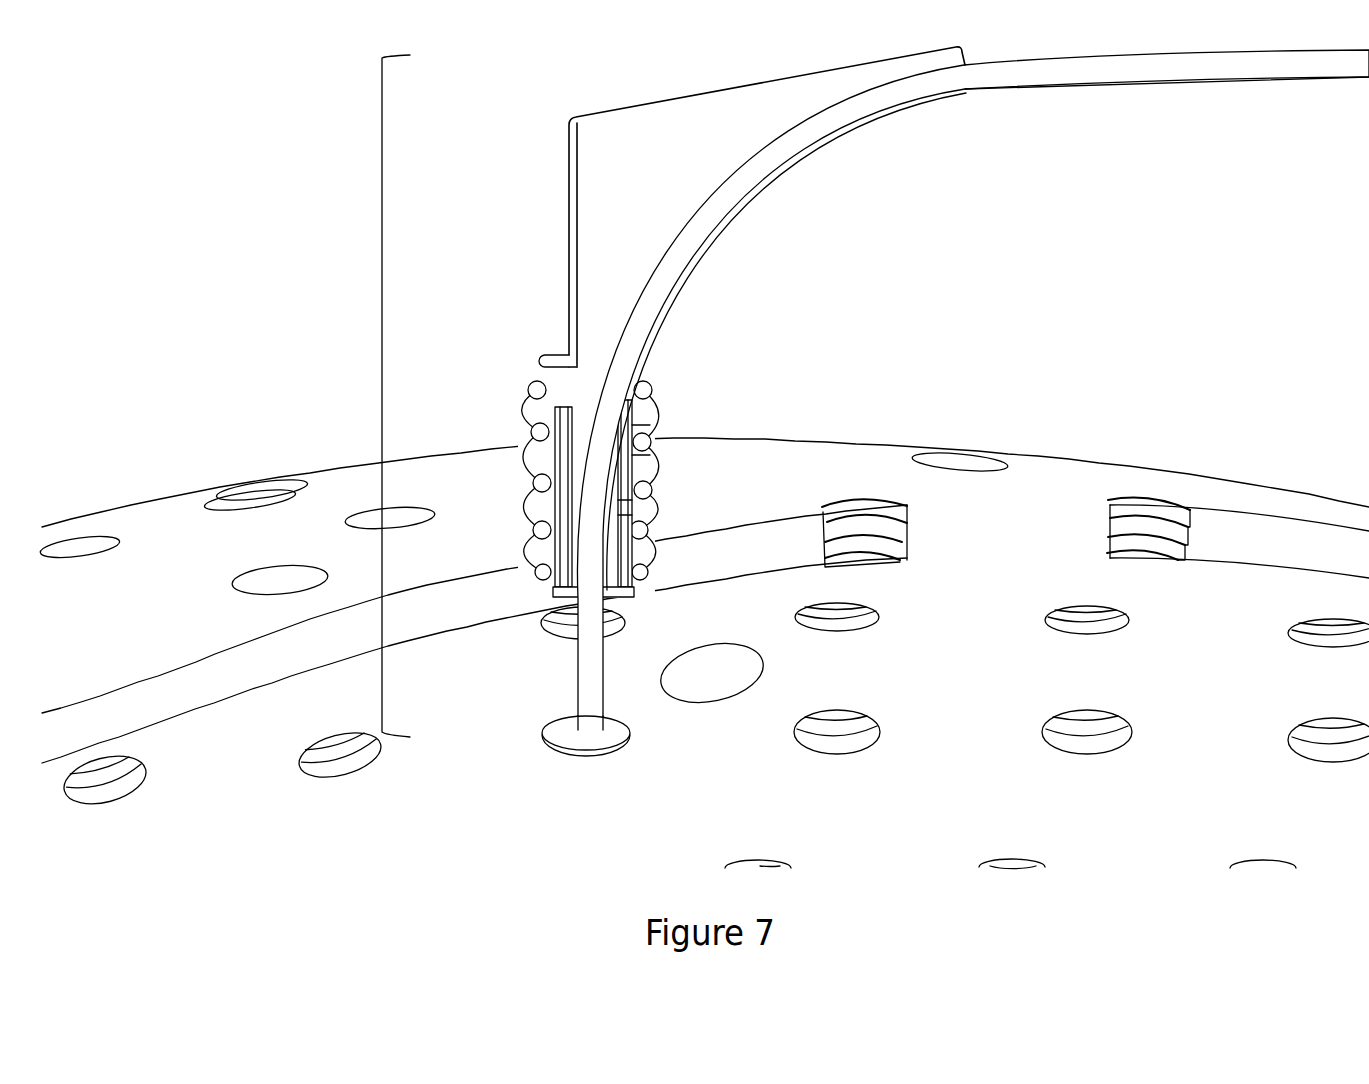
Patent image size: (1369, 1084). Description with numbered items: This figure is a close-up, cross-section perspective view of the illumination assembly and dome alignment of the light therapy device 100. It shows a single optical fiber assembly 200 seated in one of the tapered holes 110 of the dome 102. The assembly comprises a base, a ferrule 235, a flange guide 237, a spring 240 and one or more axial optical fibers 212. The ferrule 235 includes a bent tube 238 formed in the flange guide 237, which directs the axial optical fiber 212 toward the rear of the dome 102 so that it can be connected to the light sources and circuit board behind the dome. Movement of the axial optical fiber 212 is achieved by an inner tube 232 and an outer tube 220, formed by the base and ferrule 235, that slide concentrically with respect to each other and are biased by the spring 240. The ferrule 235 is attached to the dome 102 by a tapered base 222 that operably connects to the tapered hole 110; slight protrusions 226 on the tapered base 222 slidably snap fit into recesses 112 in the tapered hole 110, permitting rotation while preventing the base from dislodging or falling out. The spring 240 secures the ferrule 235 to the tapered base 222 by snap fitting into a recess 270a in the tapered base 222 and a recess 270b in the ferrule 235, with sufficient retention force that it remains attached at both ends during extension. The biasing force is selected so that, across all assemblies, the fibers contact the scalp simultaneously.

The light therapy device 100 is at (252, 193).
The dome 102 is at (133, 498).
The tapered holes 110 is at (714, 628).
The recesses 112 is at (1187, 547).
The optical fiber assembly 200 is at (382, 400).
The axial optical fiber 212 is at (955, 403).
The outer tube 220 is at (549, 513).
The tapered base 222 is at (551, 601).
The protrusions 226 is at (637, 583).
The inner tube 232 is at (647, 506).
The ferrule 235 is at (539, 351).
The flange guide 237 is at (697, 207).
The bent tube 238 is at (710, 243).
The spring 240 is at (657, 433).
The recess in tapered base 270a is at (636, 533).
The recess in ferrule 270b is at (546, 407).